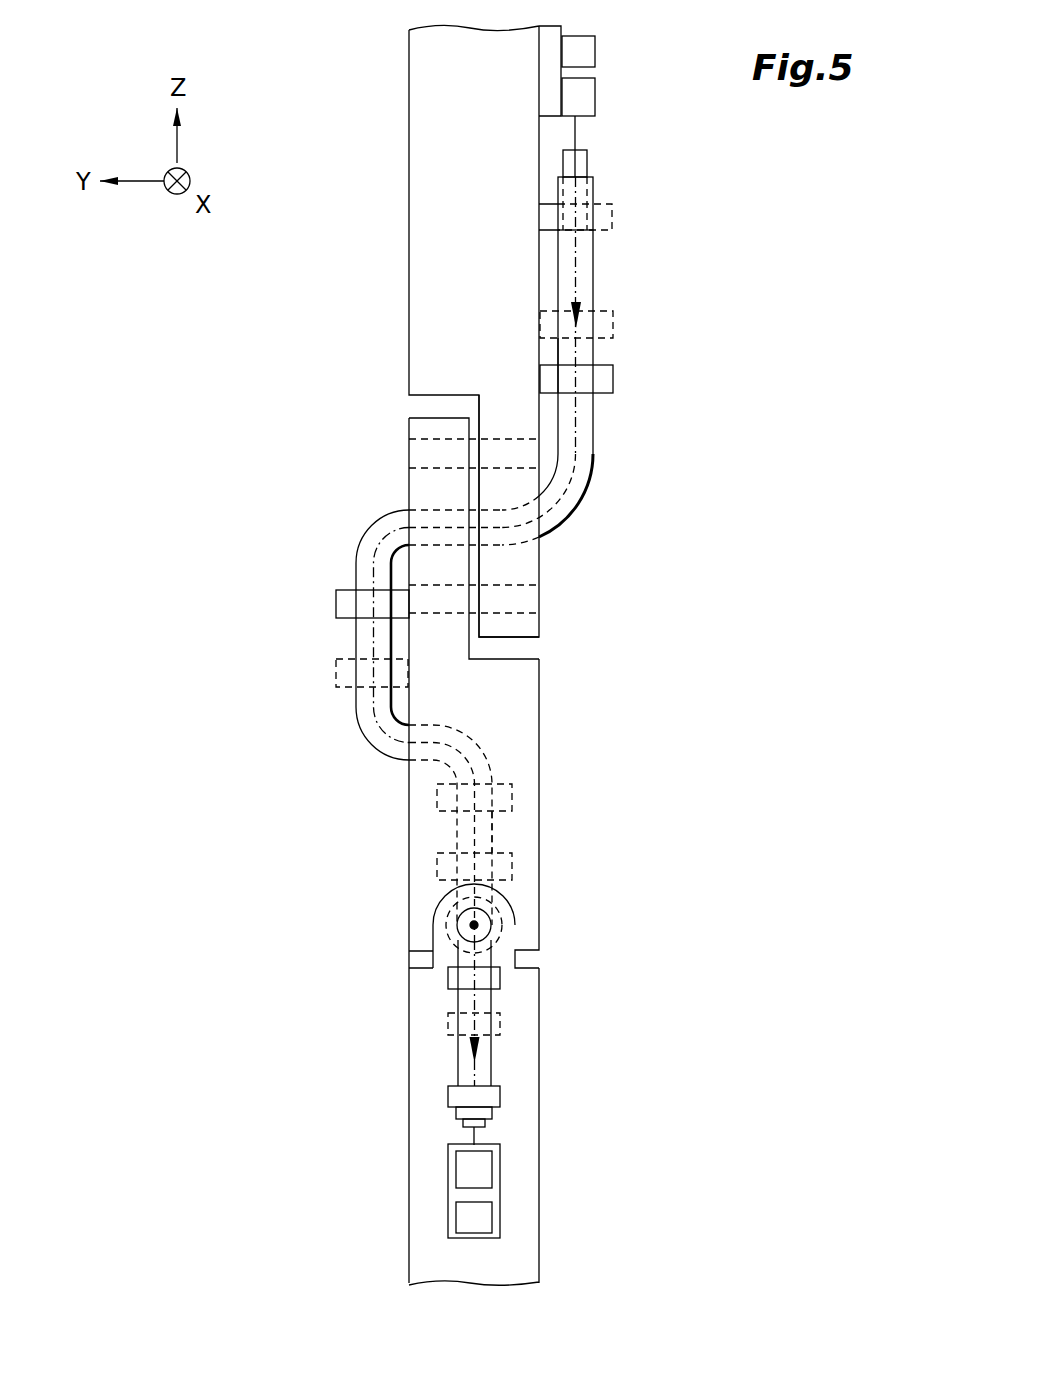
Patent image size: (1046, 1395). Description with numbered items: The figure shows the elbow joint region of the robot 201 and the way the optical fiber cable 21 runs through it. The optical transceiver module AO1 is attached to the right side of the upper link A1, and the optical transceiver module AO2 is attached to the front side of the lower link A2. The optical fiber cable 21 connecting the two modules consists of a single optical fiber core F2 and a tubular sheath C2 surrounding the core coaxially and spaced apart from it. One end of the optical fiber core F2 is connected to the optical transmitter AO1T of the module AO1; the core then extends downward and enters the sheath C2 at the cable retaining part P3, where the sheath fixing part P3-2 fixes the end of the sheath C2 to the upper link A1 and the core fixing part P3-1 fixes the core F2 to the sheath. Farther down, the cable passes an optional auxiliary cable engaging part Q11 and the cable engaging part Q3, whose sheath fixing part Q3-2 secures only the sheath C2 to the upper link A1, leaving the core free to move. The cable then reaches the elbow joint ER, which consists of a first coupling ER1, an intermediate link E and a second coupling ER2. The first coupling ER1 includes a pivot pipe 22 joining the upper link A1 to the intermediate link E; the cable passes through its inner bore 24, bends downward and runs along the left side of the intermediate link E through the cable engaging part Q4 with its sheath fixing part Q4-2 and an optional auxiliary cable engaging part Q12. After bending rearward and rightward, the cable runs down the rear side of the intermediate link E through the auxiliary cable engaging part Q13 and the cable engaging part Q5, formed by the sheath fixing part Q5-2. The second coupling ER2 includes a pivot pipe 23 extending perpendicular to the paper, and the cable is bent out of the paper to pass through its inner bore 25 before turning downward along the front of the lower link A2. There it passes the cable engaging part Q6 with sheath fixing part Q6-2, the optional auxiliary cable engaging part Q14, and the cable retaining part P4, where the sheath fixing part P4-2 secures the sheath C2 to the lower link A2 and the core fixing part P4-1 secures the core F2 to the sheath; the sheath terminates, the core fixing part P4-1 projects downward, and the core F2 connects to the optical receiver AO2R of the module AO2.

The mobile body / robot unit 201 is at (428, 331).
The upper link A1 is at (405, 287).
The optical transceiver module AO1 is at (552, 36).
The optical transmitter AO1T is at (596, 100).
The core fixing part P3-1 is at (582, 165).
The sheath fixing part P3-2 is at (548, 207).
The cable retaining part P3 is at (633, 219).
The sheath C2 is at (596, 262).
The optical fiber cable 21 is at (621, 387).
The optical fiber core F2 is at (580, 286).
The auxiliary cable engaging part Q11 is at (632, 323).
The cable engaging part Q3 is at (634, 378).
The sheath fixing part Q3-2 is at (549, 386).
The pivot pipe 22 is at (418, 459).
The cable engaging part Q4 is at (334, 604).
The sheath fixing part Q4-2 is at (403, 609).
The auxiliary cable engaging part Q12 is at (334, 676).
The inner bore 24 is at (539, 550).
The first coupling ER1 is at (586, 526).
The elbow joint ER is at (563, 679).
The intermediate link E is at (539, 728).
The auxiliary cable engaging part Q13 is at (518, 791).
The sheath fixing part Q5-2 is at (500, 857).
The cable engaging part Q5 is at (518, 875).
The pivot pipe 23 is at (453, 935).
The inner bore 25 is at (491, 933).
The second coupling ER2 is at (503, 955).
The cable engaging part Q6 is at (446, 985).
The sheath fixing part Q6-2 is at (500, 978).
The auxiliary cable engaging part Q14 is at (504, 1027).
The lower link A2 is at (407, 1085).
The cable retaining part P4 is at (504, 1092).
The sheath fixing part P4-2 is at (485, 1112).
The core fixing part P4-1 is at (482, 1123).
The optical receiver AO2R is at (457, 1179).
The optical transceiver module AO2 is at (450, 1222).